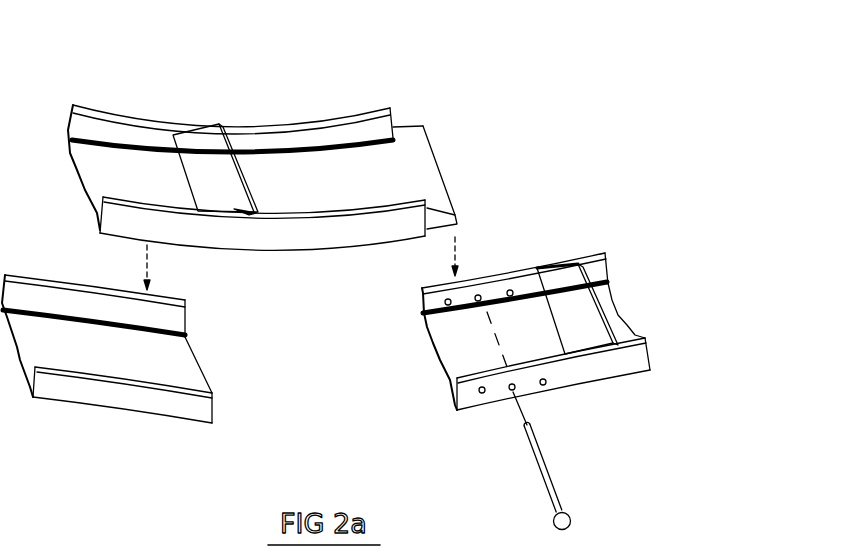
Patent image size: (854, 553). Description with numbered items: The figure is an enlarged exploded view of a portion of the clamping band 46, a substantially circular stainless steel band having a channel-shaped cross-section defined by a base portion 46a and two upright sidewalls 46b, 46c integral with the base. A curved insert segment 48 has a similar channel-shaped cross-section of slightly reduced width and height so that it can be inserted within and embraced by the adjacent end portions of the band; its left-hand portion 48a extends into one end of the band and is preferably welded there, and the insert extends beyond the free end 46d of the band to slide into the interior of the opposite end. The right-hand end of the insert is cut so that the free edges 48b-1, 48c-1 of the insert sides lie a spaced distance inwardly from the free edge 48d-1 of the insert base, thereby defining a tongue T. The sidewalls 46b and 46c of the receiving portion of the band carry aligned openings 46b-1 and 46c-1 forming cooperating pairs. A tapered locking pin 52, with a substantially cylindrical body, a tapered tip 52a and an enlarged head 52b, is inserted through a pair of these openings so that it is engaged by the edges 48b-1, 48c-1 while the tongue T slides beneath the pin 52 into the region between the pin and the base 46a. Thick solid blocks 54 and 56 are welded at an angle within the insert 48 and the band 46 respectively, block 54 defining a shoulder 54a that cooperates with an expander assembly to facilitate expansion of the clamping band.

The clamping band 46 is at (119, 444).
The base portion 46a is at (605, 302).
The sidewall 46b is at (603, 265).
The openings 46b-1 is at (478, 298).
The sidewall 46c is at (603, 375).
The openings 46c-1 is at (513, 390).
The free end 46d is at (212, 412).
The curved insert segment 48 is at (274, 275).
The insert portion 48a is at (218, 122).
The free edge 48b-1 is at (391, 110).
The free edge 48c-1 is at (428, 208).
The free edge 48d-1 is at (432, 213).
The tapered locking pin 52 is at (527, 481).
The tapered tip 52a is at (525, 427).
The enlarged head 52b is at (553, 522).
The solid block 54 is at (222, 124).
The shoulder 54a is at (230, 150).
The solid block 56 is at (558, 283).
The tongue T is at (423, 127).